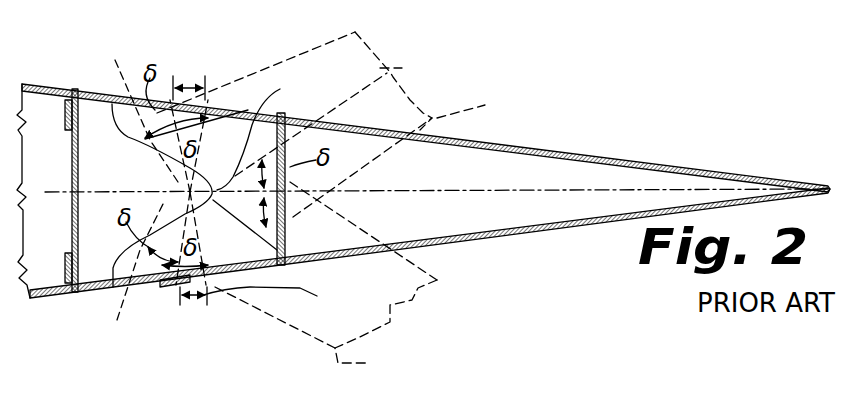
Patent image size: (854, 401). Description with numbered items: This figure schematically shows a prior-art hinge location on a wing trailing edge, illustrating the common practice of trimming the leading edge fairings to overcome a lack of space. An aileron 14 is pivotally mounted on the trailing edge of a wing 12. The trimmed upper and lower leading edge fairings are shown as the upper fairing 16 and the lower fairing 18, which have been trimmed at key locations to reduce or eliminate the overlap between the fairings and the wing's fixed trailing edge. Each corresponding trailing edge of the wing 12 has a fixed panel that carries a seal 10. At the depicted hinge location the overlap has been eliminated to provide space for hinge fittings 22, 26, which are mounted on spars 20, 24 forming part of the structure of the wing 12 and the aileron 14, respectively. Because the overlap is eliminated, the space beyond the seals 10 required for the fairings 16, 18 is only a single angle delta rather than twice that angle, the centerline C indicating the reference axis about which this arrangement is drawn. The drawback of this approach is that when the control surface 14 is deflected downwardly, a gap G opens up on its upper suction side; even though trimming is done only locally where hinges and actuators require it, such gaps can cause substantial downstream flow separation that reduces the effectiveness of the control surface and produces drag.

The seal 10 is at (170, 290).
The wing 12 is at (45, 300).
The aileron 14 is at (534, 280).
The upper fairing 16 is at (272, 36).
The lower fairing 18 is at (254, 298).
The spar 20 is at (72, 148).
The hinge fitting 22 is at (298, 78).
The spar 24 is at (283, 246).
The hinge fitting 26 is at (275, 216).
The gap G is at (193, 80).
The centerline C is at (580, 188).